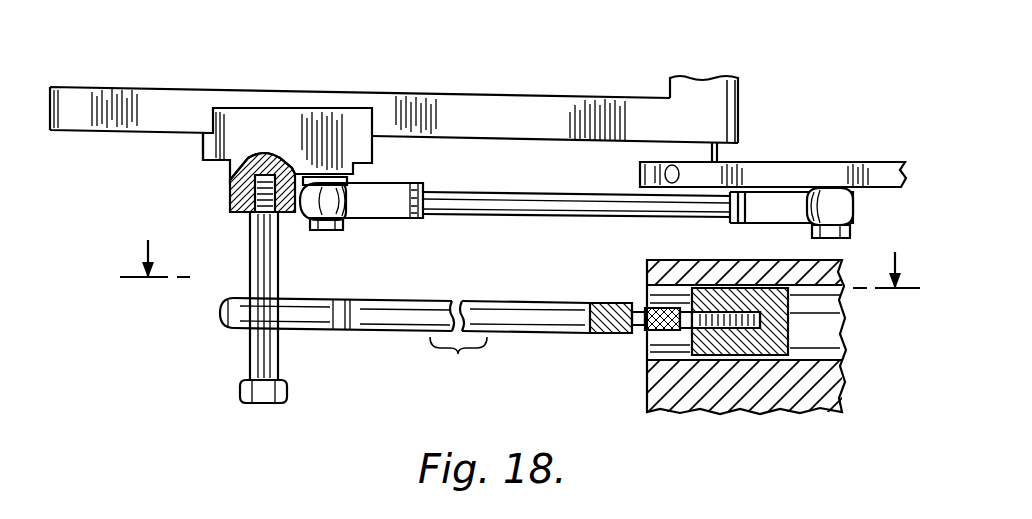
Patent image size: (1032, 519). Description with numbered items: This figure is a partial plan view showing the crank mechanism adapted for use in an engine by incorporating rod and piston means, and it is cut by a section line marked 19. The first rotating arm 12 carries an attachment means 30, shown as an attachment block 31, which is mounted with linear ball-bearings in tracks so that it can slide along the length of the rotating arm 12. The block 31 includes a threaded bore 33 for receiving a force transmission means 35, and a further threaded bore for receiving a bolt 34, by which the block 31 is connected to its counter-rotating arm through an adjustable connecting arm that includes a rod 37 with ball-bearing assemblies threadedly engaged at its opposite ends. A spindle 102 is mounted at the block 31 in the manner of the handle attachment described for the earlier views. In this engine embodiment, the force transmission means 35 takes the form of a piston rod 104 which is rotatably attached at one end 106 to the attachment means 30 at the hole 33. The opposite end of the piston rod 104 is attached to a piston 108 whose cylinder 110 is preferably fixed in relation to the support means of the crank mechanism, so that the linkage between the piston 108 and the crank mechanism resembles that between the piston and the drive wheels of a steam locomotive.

The first rotating arm 12 is at (208, 82).
The section line 19- 19 is at (520, 252).
The attachment means 30 is at (200, 166).
The attachment block 31 is at (322, 108).
The threaded bore 33 is at (262, 216).
The bolt 34 is at (340, 230).
The force transmission means 35 is at (316, 336).
The rod 37 is at (577, 218).
The spindle 102 is at (282, 278).
The piston rod 104 is at (553, 336).
The one end of piston rod 106 is at (232, 331).
The piston 108 is at (694, 358).
The cylinder 110 is at (660, 404).